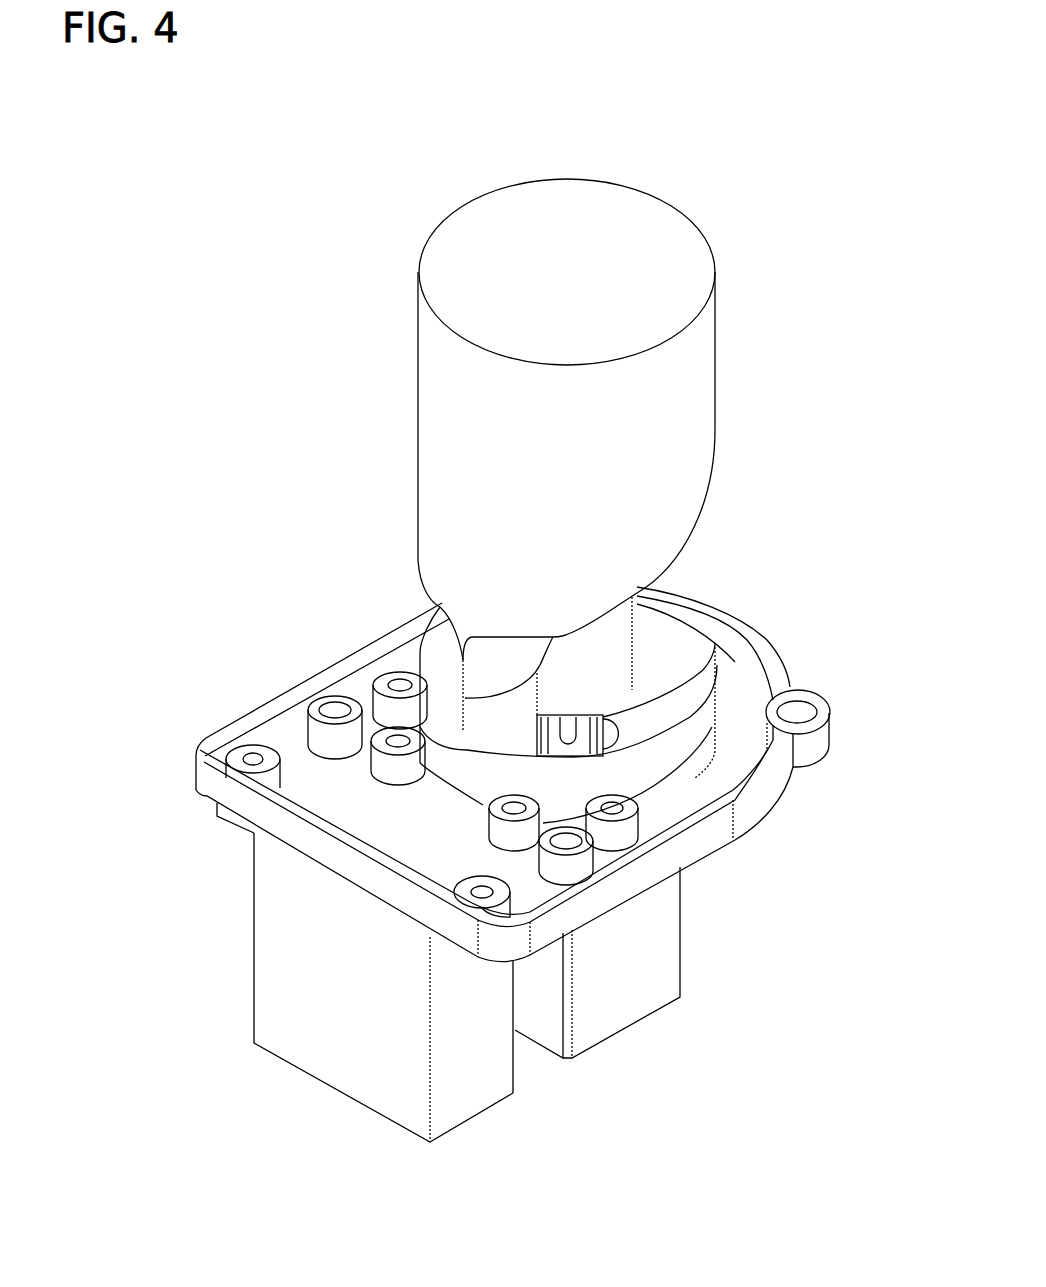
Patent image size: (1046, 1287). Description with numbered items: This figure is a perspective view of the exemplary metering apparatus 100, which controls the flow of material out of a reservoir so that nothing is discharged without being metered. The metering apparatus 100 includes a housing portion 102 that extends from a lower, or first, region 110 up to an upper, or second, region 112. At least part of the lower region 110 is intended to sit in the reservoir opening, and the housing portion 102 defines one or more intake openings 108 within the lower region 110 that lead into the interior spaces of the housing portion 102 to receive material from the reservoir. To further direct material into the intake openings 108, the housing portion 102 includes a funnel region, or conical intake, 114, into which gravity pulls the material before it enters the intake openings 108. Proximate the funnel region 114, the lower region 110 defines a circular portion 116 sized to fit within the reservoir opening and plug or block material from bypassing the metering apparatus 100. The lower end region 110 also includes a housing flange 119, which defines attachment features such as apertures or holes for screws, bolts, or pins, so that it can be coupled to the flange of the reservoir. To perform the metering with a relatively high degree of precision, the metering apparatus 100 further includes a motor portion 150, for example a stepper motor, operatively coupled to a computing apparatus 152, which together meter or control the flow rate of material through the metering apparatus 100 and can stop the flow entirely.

The metering apparatus 100 is at (174, 264).
The housing portion 102 is at (435, 380).
The intake openings 108 is at (600, 730).
The lower region 110 is at (432, 687).
The upper region 112 is at (467, 251).
The funnel region 114 is at (667, 633).
The circular portion 116 is at (700, 733).
The housing flange 119 is at (297, 743).
The motor portion 150 is at (632, 953).
The computing apparatus 152 is at (332, 933).